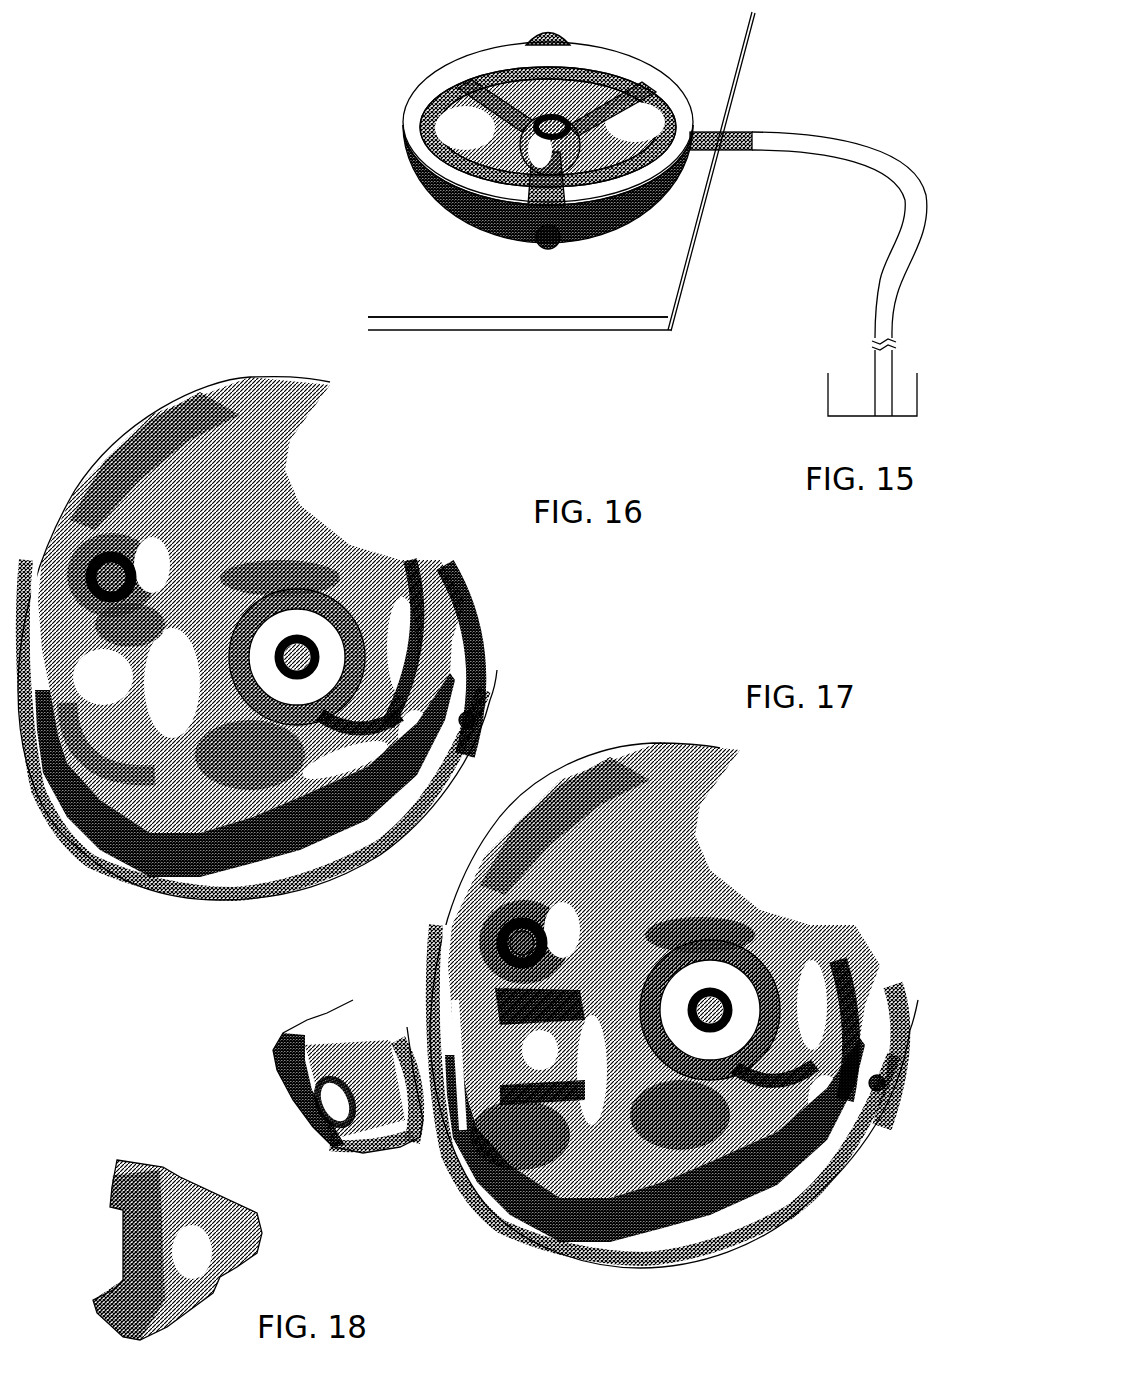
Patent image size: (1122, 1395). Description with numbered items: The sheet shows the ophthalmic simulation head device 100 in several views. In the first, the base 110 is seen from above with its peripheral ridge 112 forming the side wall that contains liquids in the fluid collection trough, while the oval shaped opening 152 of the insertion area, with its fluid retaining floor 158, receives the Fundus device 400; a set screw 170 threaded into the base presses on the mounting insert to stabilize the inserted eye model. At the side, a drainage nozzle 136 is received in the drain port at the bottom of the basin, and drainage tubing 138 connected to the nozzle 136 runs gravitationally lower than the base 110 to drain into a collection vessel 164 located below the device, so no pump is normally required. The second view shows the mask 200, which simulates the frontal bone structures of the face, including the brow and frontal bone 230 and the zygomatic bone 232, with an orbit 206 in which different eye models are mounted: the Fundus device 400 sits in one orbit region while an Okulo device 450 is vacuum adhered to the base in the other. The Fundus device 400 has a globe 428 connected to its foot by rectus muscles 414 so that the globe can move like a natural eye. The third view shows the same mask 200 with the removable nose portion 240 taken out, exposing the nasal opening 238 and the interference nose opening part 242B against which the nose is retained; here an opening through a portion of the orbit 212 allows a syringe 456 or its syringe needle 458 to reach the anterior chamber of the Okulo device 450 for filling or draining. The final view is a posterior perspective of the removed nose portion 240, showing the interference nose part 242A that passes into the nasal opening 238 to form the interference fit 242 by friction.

In FIG. 15, the ophthalmic simulation head device 100 is at (343, 185).
In FIG. 16, the ophthalmic simulation head device 100 is at (538, 668).
In FIG. 17, the ophthalmic simulation head device 100 is at (643, 682).
In FIG. 15, the oval shaped opening 152 is at (582, 82).
In FIG. 15, the fluid retaining floor 158 is at (526, 96).
In FIG. 15, the drainage nozzle 136 is at (710, 128).
In FIG. 15, the drainage tubing 138 is at (885, 270).
In FIG. 15, the collection vessel 164 is at (823, 385).
In FIG. 15, the set screw 170 is at (548, 264).
In FIG. 15, the Fundus device 400 is at (503, 160).
In FIG. 16, the Fundus device 400 is at (118, 590).
In FIG. 17, the Fundus device 400 is at (484, 913).
In FIG. 16, the mask 200 is at (196, 389).
In FIG. 17, the mask 200 is at (812, 797).
In FIG. 16, the brow and frontal bone 230 is at (385, 522).
In FIG. 17, the brow and frontal bone 230 is at (685, 887).
In FIG. 16, the ridge 112 is at (35, 757).
In FIG. 16, the interference fit 242 is at (182, 704).
In FIG. 16, the syringe 456 is at (236, 774).
In FIG. 17, the syringe 456 is at (650, 1142).
In FIG. 16, the zygomatic bone 232 is at (278, 778).
In FIG. 16, the Okulo device 450 is at (297, 657).
In FIG. 17, the Okulo device 450 is at (712, 958).
In FIG. 17, the globe 428 is at (516, 906).
In FIG. 17, the interference nose opening part 242B is at (565, 1002).
In FIG. 17, the rectus muscles 414 is at (478, 1010).
In FIG. 17, the base 110 is at (478, 1197).
In FIG. 17, the nasal opening 238 is at (574, 1138).
In FIG. 17, the portion of the orbit 212 is at (676, 1124).
In FIG. 17, the syringe needle 458 is at (694, 1094).
In FIG. 17, the orbit 206 is at (778, 1102).
In FIG. 18, the nose portion 240 is at (322, 1027).
In FIG. 18, the interference nose part 242A is at (102, 1178).